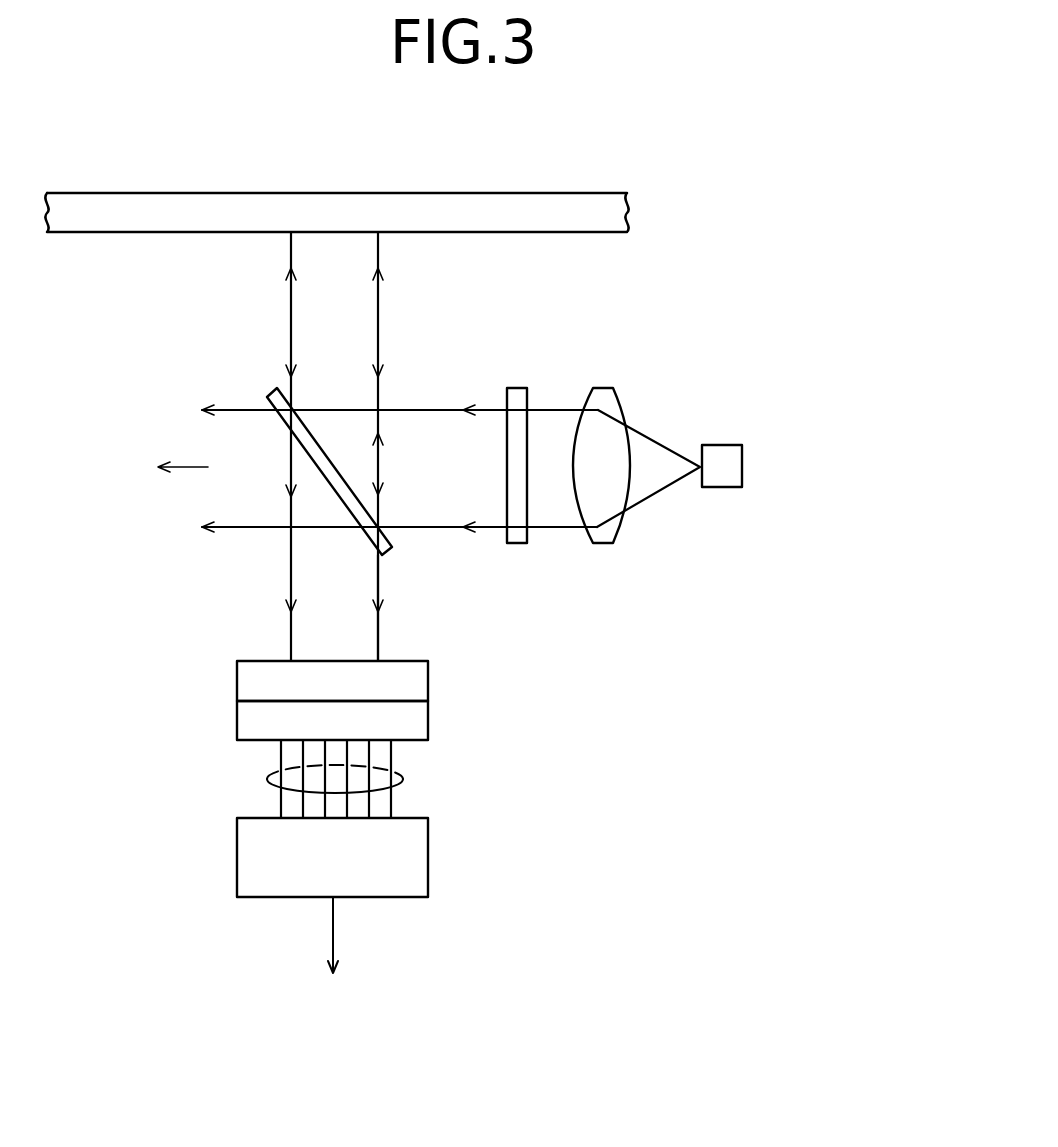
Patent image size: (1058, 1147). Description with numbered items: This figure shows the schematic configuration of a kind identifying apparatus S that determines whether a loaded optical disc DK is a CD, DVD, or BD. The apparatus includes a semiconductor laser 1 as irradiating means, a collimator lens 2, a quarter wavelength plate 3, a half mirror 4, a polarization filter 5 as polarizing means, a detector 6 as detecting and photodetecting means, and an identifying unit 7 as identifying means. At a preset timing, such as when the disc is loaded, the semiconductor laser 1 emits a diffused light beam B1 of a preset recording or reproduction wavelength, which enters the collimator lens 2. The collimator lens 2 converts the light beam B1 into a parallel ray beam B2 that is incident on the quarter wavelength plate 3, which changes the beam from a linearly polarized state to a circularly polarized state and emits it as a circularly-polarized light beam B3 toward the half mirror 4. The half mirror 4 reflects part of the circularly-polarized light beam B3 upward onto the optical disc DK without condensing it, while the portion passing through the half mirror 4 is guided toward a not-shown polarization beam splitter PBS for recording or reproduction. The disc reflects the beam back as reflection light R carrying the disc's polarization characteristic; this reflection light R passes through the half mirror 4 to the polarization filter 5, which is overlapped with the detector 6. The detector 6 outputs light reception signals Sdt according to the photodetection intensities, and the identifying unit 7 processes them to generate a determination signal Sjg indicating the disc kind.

The optical disc DK is at (583, 193).
The semiconductor laser 1 is at (735, 445).
The collimator lens 2 is at (600, 388).
The quarter wavelength plate 3 is at (515, 543).
The half mirror 4 is at (392, 553).
The polarization filter 5 is at (428, 683).
The detector 6 is at (428, 725).
The identifying unit 7 is at (428, 858).
The light beam B1 is at (655, 438).
The parallel ray beam B2 is at (553, 410).
The circularly-polarized light beam B3 is at (378, 350).
The reflection light R is at (380, 590).
The polarization beam splitter PBS is at (152, 464).
The light reception signals Sdt is at (403, 779).
The determination signal Sjg is at (335, 935).
The kind identifying apparatus S is at (525, 1021).